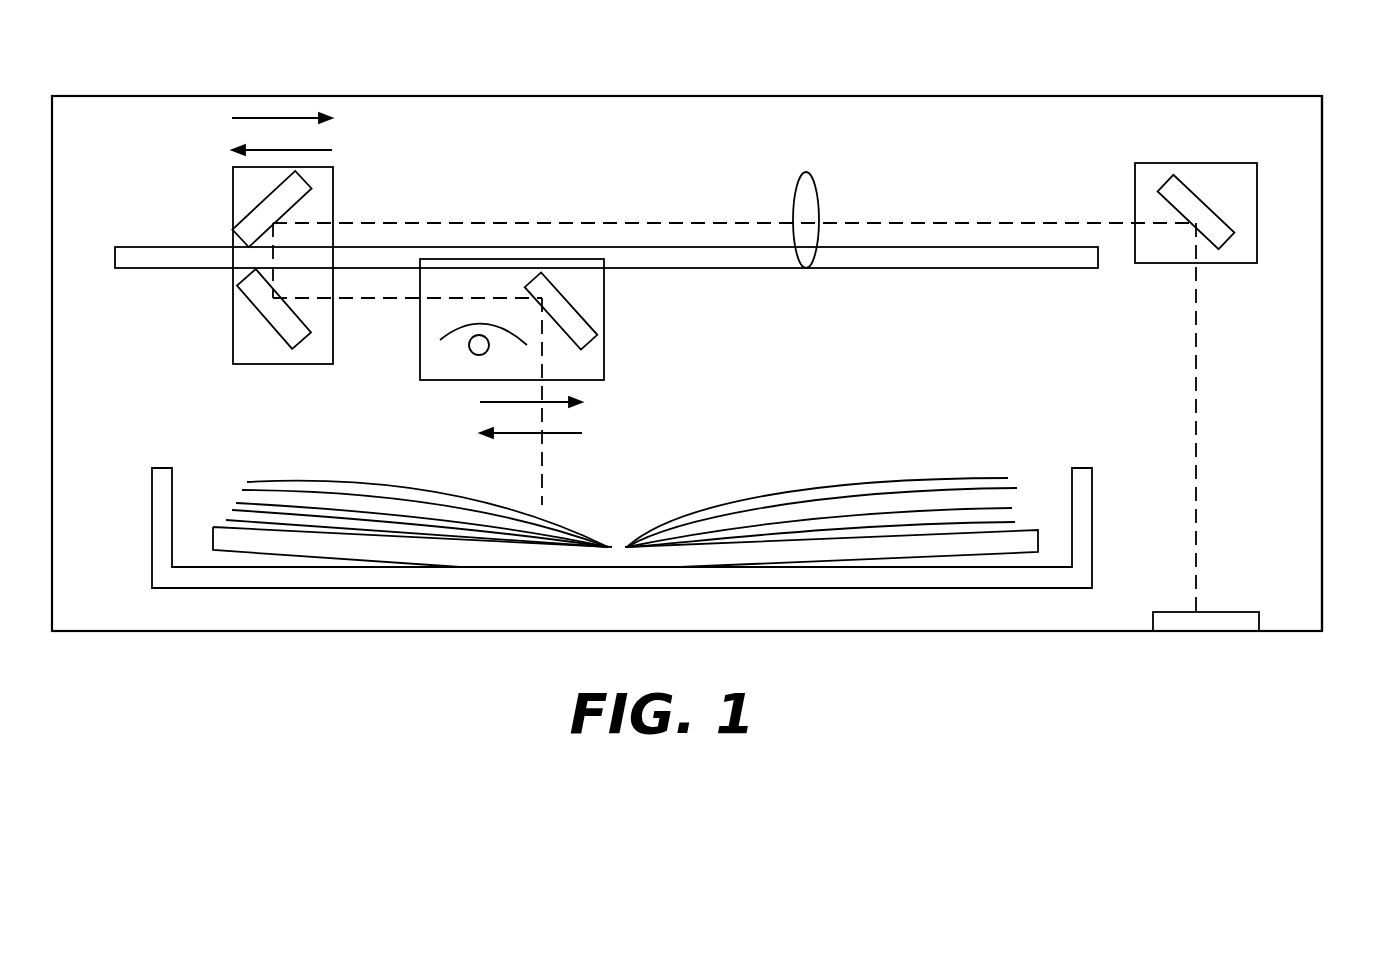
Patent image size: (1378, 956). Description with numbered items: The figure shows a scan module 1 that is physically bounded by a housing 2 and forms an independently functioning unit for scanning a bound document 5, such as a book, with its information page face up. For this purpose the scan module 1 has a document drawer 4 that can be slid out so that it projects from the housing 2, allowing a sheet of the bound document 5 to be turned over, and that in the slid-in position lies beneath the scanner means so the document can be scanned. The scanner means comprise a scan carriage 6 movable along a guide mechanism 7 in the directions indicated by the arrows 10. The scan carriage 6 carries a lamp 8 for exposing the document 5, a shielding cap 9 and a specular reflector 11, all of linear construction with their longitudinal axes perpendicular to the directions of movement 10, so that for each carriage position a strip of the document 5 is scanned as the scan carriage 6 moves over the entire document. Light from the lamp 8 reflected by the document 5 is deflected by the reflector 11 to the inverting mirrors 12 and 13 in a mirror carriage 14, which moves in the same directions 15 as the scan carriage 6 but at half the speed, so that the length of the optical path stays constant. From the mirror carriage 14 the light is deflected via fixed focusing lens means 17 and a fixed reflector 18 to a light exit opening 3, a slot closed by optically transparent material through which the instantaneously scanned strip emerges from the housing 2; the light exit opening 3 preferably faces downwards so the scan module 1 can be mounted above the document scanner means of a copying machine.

The scan module 1 is at (1042, 127).
The housing 2 is at (1323, 519).
The light exit opening 3 is at (1215, 631).
The document drawer 4 is at (903, 587).
The bound document 5 is at (800, 488).
The scan carriage 6 is at (604, 337).
The guide mechanism 7 is at (967, 268).
The lamp 8 is at (479, 355).
The shielding cap 9 is at (442, 338).
The directions of movement 10 is at (548, 434).
The specular reflector 11 is at (573, 303).
The inverting mirror 12 is at (300, 190).
The inverting mirror 13 is at (277, 330).
The mirror carriage 14 is at (233, 344).
The directions of movement 15 is at (243, 119).
The fixed focusing lens means 17 is at (818, 200).
The fixed reflector 18 is at (1208, 205).